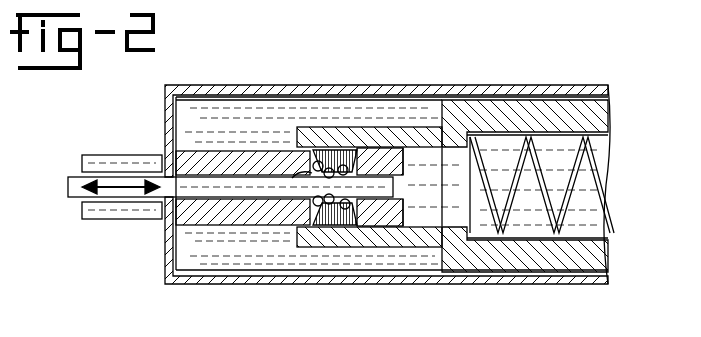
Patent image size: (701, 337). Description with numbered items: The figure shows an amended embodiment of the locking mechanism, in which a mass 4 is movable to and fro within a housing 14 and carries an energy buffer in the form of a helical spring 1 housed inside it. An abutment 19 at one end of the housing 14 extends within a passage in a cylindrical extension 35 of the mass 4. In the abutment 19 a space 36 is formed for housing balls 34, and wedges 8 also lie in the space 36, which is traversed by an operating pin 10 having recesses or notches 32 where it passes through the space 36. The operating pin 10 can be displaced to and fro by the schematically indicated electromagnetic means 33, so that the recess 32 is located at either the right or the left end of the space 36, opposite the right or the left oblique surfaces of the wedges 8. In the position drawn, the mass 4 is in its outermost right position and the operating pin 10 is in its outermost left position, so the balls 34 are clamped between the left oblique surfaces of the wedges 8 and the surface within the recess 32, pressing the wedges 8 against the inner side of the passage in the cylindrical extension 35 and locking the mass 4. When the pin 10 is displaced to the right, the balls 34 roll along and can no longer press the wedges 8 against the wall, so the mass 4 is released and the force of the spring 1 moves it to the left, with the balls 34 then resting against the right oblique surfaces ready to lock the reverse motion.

The helical spring 1 is at (543, 208).
The mass 4 is at (558, 257).
The wedges 8 is at (341, 146).
The operating pin 10 is at (193, 190).
The housing 14 is at (378, 284).
The abutment 19 is at (228, 157).
The recesses or notches 32 is at (288, 218).
The electromagnetic means 33 is at (123, 165).
The balls 34 is at (313, 162).
The cylindrical extension 35 is at (398, 133).
The space 36 is at (370, 147).